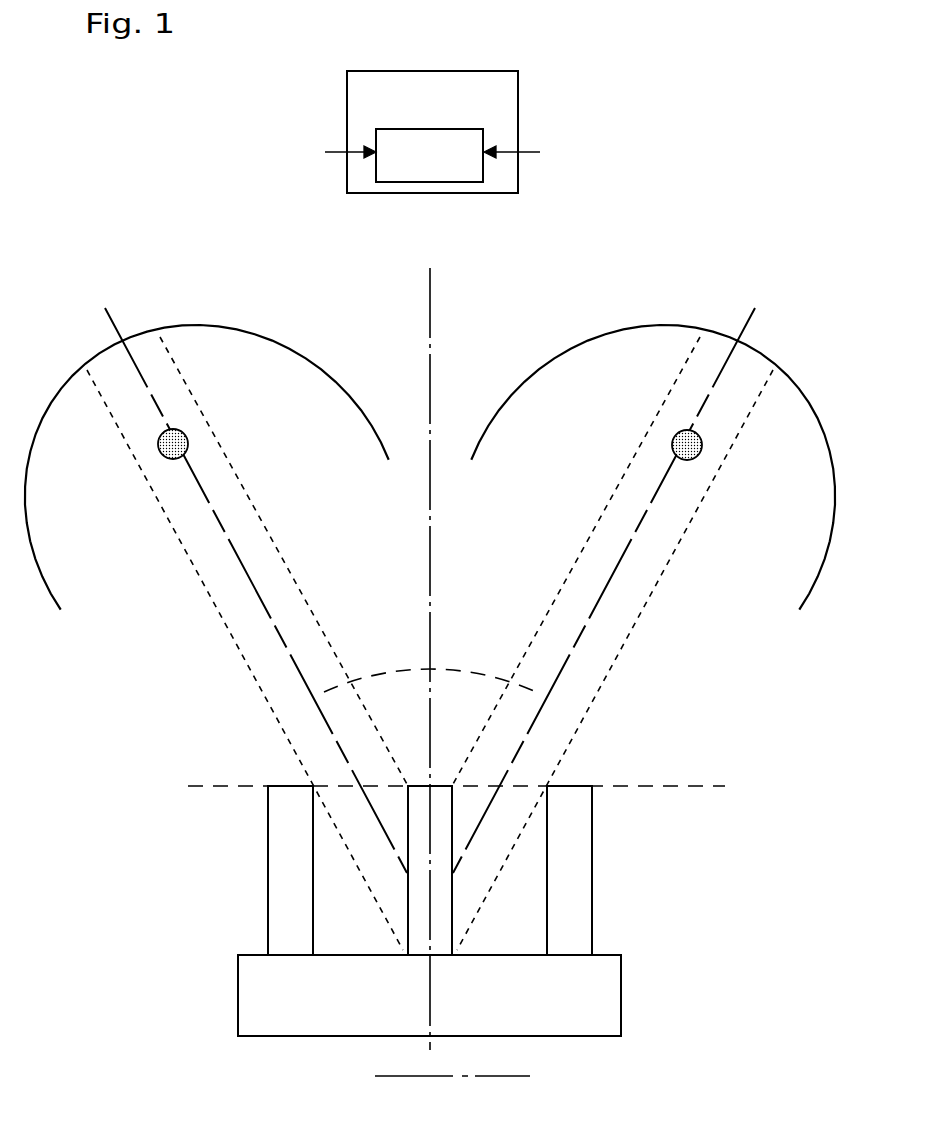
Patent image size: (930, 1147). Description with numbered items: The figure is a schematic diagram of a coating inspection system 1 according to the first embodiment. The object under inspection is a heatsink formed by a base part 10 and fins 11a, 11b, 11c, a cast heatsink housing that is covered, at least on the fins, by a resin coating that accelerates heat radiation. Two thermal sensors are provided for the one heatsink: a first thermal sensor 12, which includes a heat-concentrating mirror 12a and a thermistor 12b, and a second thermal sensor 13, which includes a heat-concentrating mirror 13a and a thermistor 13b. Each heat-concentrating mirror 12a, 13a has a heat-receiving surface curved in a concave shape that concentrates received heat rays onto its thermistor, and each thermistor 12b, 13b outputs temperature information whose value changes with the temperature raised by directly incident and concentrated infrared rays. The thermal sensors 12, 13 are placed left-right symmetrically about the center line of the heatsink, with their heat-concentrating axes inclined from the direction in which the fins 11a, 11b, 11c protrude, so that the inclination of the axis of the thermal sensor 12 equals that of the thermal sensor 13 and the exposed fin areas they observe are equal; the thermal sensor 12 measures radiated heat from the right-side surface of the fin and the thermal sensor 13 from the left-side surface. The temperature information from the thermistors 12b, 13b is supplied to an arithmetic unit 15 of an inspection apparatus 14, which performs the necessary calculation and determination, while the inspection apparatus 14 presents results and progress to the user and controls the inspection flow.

The coating inspection system 1 is at (613, 59).
The base part 10 is at (621, 995).
The fin 11a is at (268, 875).
The fin 11b is at (452, 903).
The fin 11c is at (592, 875).
The thermal sensor 12 is at (643, 605).
The heat-concentrating mirror 12a is at (548, 368).
The thermistor 12b is at (687, 430).
The thermal sensor 13 is at (216, 608).
The heat-concentrating mirror 13a is at (317, 368).
The thermistor 13b is at (173, 430).
The inspection apparatus 14 is at (425, 70).
The arithmetic unit 15 is at (447, 128).